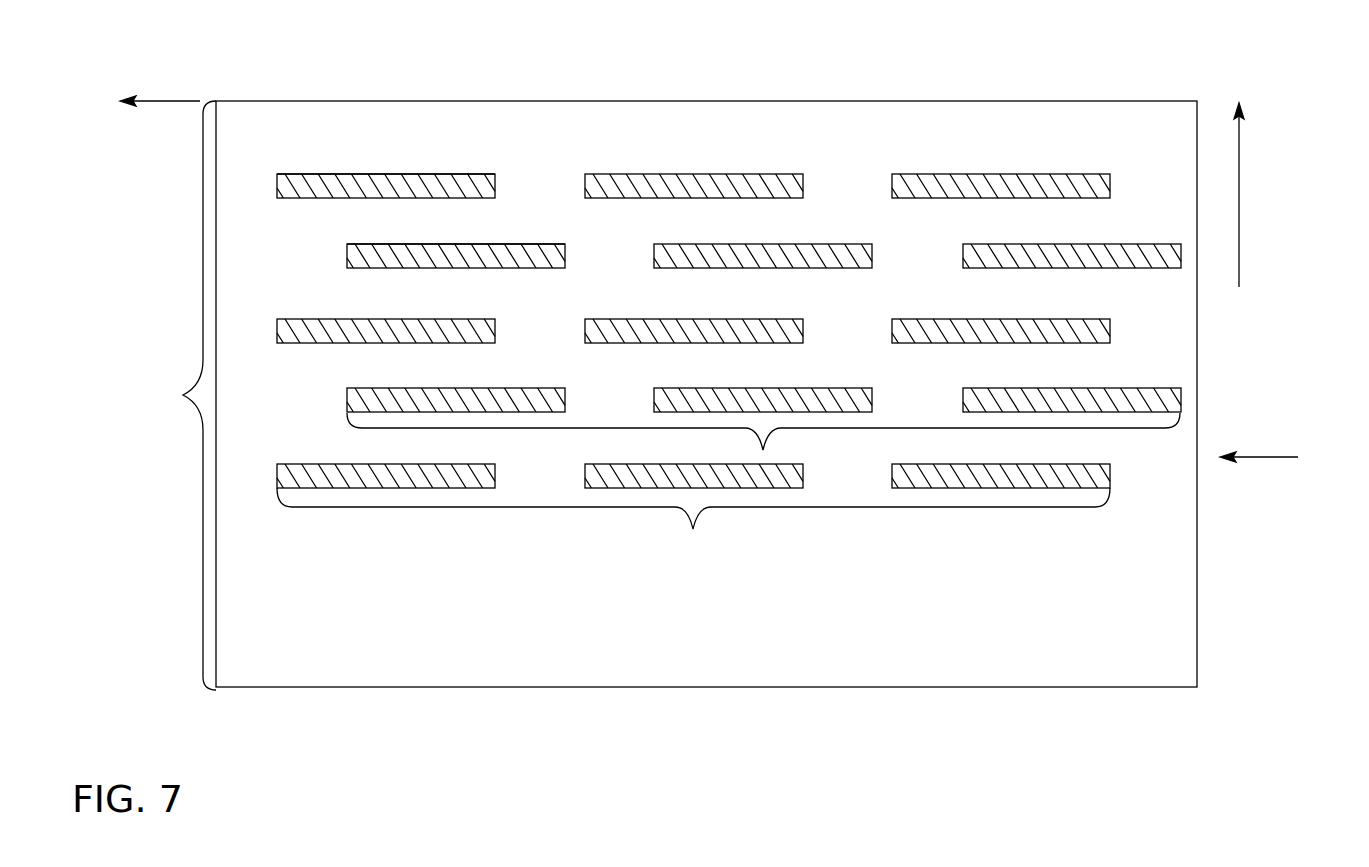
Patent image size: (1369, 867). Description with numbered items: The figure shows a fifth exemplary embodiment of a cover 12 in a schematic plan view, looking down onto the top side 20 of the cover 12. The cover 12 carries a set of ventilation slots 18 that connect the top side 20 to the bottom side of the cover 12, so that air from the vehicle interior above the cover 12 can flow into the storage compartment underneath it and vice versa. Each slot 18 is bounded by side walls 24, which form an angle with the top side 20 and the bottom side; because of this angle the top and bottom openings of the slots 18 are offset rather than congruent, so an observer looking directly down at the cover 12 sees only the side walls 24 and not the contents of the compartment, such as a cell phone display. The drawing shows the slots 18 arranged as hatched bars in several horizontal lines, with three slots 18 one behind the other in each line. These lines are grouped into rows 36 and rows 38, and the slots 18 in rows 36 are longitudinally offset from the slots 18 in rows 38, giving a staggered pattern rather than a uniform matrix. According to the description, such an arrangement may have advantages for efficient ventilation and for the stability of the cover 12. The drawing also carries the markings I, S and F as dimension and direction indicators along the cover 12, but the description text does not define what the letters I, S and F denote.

The cover 12 is at (1277, 457).
The slots 18 is at (377, 256).
The top side 20 is at (810, 669).
The side walls 24 is at (487, 244).
The rows 36 is at (510, 428).
The rows 38 is at (717, 513).
The length/extent indicator I is at (193, 395).
The direction S is at (160, 100).
The direction F is at (1240, 198).